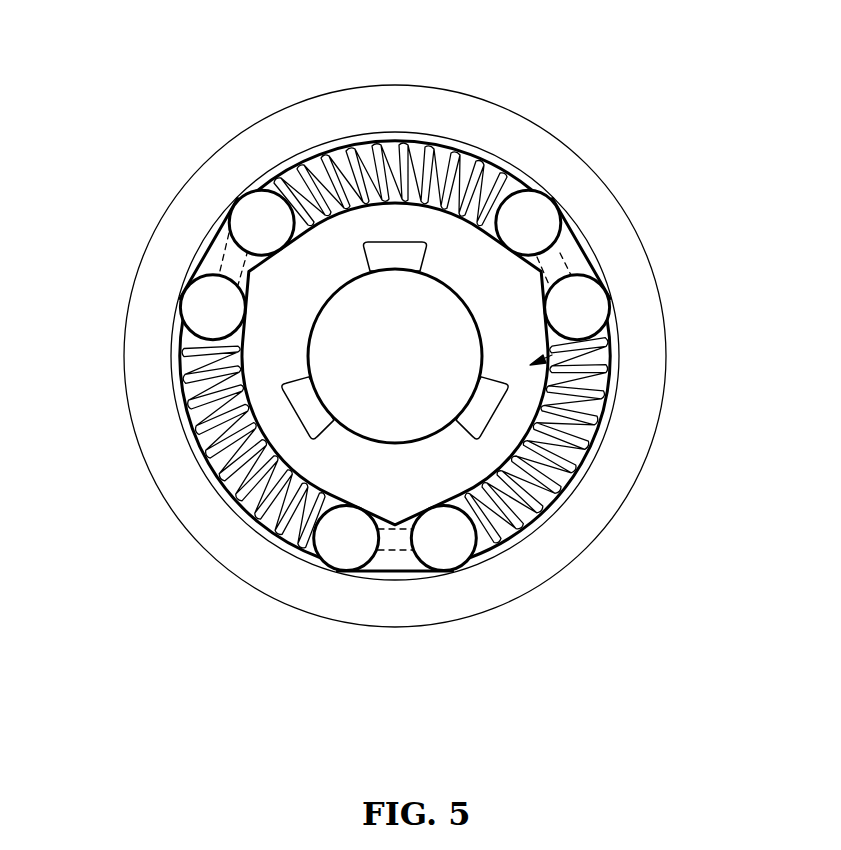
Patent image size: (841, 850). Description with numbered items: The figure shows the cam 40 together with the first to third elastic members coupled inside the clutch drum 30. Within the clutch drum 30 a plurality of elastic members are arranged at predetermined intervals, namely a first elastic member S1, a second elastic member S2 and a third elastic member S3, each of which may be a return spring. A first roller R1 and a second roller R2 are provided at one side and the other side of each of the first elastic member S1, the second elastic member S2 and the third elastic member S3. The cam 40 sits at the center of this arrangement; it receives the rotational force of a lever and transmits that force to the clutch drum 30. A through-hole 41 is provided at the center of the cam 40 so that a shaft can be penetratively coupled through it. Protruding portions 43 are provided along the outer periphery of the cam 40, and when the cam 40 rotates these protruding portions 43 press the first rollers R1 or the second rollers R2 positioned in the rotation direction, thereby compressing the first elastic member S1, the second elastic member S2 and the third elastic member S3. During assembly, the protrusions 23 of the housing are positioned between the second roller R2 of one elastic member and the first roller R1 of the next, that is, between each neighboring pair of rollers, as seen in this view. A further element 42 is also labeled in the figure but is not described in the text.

The clutch drum 30 is at (536, 124).
The cam 40 is at (600, 367).
The through-hole 41 is at (413, 433).
The protrusion 42 is at (395, 252).
The protruding portions 43 is at (227, 240).
The protrusions 23 is at (222, 272).
The first roller R1 is at (243, 220).
The second roller R2 is at (198, 307).
The first elastic member S1 is at (334, 152).
The second elastic member S2 is at (587, 402).
The third elastic member S3 is at (240, 518).